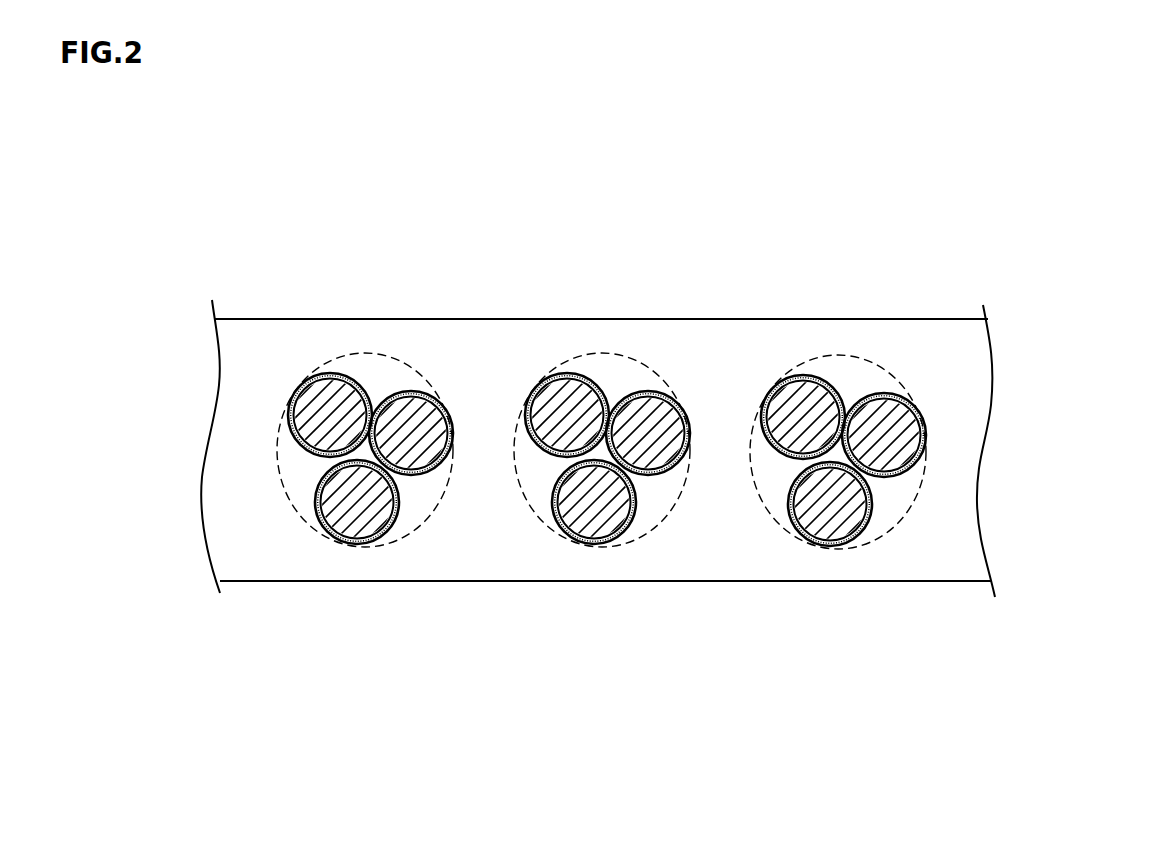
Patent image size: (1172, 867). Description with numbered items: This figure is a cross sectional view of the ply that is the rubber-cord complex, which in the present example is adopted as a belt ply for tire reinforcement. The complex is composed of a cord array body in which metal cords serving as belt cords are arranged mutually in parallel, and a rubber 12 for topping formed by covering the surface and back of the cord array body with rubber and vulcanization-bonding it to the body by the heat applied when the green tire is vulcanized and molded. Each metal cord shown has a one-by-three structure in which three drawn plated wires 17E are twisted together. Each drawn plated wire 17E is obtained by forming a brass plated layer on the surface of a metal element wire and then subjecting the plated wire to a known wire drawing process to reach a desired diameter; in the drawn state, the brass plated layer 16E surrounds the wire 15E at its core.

The rubber for topping 12 is at (678, 348).
The drawn plated wire 17E is at (863, 728).
The brass plated layer 16E is at (803, 541).
The wire 15E is at (830, 503).